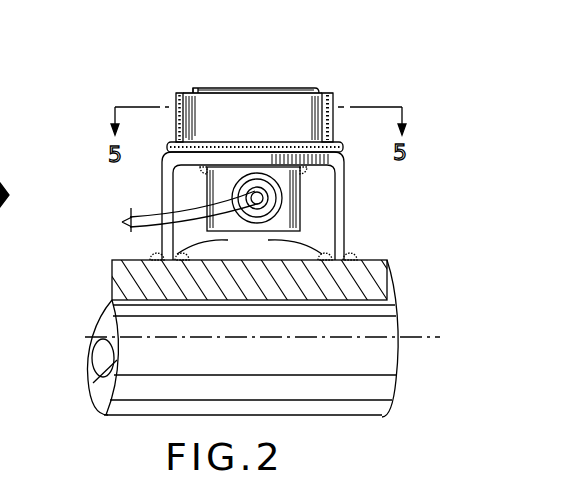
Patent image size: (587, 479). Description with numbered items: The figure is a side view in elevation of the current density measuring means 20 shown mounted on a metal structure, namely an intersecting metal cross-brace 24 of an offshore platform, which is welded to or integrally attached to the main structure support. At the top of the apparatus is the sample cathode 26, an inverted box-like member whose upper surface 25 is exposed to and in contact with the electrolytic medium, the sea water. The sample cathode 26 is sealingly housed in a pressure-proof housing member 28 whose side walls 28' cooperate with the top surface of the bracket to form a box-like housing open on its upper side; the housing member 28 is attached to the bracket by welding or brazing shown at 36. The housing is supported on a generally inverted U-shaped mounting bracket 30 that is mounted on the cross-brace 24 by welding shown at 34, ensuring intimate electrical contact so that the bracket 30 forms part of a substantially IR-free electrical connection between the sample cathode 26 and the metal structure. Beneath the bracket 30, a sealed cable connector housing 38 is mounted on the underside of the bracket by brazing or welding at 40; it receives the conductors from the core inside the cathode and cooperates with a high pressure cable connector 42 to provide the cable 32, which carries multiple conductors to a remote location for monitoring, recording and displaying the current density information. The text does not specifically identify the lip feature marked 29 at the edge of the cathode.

The current density measuring means 20 is at (314, 80).
The metal cross-brace 24 is at (112, 280).
The surface 25 is at (245, 87).
The sample cathode 26 is at (288, 87).
The housing member 28 is at (144, 102).
The side walls 28' is at (359, 102).
The plate lip 29 is at (190, 87).
The mounting bracket 30 is at (346, 226).
The cable 32 is at (150, 228).
The welding 34 is at (249, 242).
The welding or brazing 36 is at (288, 143).
The cable connector housing 38 is at (303, 188).
The brazing or welding 40 is at (194, 175).
The high pressure cable connector 42 is at (270, 201).